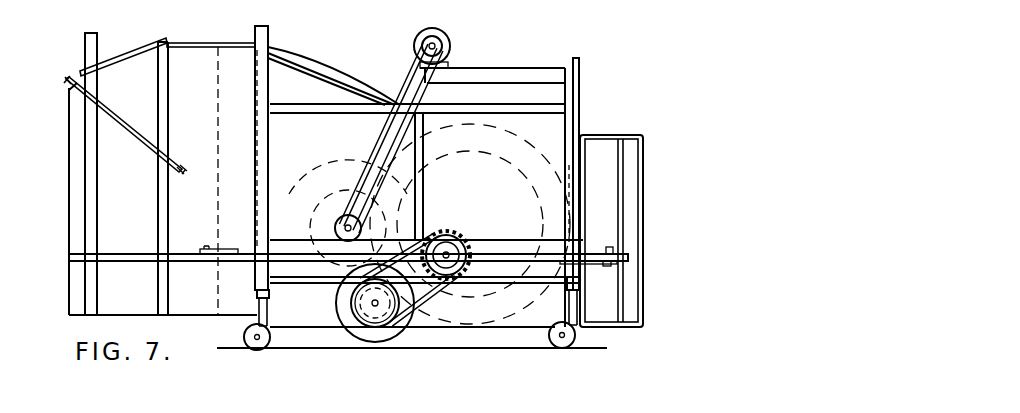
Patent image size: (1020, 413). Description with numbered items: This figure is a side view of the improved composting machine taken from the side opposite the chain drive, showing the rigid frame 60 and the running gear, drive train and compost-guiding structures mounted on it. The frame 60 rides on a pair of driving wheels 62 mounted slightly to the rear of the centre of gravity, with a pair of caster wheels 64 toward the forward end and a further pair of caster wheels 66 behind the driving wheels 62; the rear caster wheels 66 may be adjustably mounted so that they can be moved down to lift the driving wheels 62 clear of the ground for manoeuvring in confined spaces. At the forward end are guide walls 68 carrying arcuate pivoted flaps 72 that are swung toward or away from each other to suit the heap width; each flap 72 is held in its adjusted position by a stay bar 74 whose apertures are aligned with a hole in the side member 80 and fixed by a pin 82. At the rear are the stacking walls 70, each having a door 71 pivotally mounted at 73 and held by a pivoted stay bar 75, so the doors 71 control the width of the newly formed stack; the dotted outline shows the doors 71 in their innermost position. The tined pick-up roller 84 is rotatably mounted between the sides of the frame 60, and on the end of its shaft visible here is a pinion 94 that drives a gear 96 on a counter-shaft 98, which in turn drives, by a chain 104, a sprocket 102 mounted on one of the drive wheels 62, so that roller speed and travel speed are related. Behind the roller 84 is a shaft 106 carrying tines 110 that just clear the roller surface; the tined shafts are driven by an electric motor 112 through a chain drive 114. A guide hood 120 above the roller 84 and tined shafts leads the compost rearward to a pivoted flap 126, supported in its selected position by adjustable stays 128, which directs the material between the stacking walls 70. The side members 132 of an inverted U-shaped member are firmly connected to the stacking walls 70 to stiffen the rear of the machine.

The rigid frame 60 is at (298, 101).
The driving wheels 62 is at (380, 340).
The caster wheels 64 is at (562, 343).
The caster wheels 66 is at (256, 343).
The guide walls 68 is at (603, 148).
The stacking walls 70 is at (141, 66).
The door 71 is at (224, 130).
The pivoted flap 72 is at (643, 165).
The pivot 73 is at (257, 143).
The stay bar 74 is at (628, 250).
The pivoted stay bar 75 is at (207, 260).
The side member 80 is at (617, 258).
The pin 82 is at (608, 264).
The roller 84 is at (522, 148).
The pinion 94 is at (463, 226).
The gear 96 is at (458, 243).
The counter-shaft 98 is at (446, 252).
The sprocket 102 is at (360, 327).
The chain 104 is at (418, 303).
The shaft 106 is at (342, 227).
The tines 110 is at (333, 193).
The electric motor 112 is at (423, 42).
The chain drive 114 is at (402, 88).
The guide hood 120 is at (248, 42).
The pivoted flap 126 is at (71, 79).
The adjustable stays 128 is at (137, 135).
The side members 132 is at (90, 55).